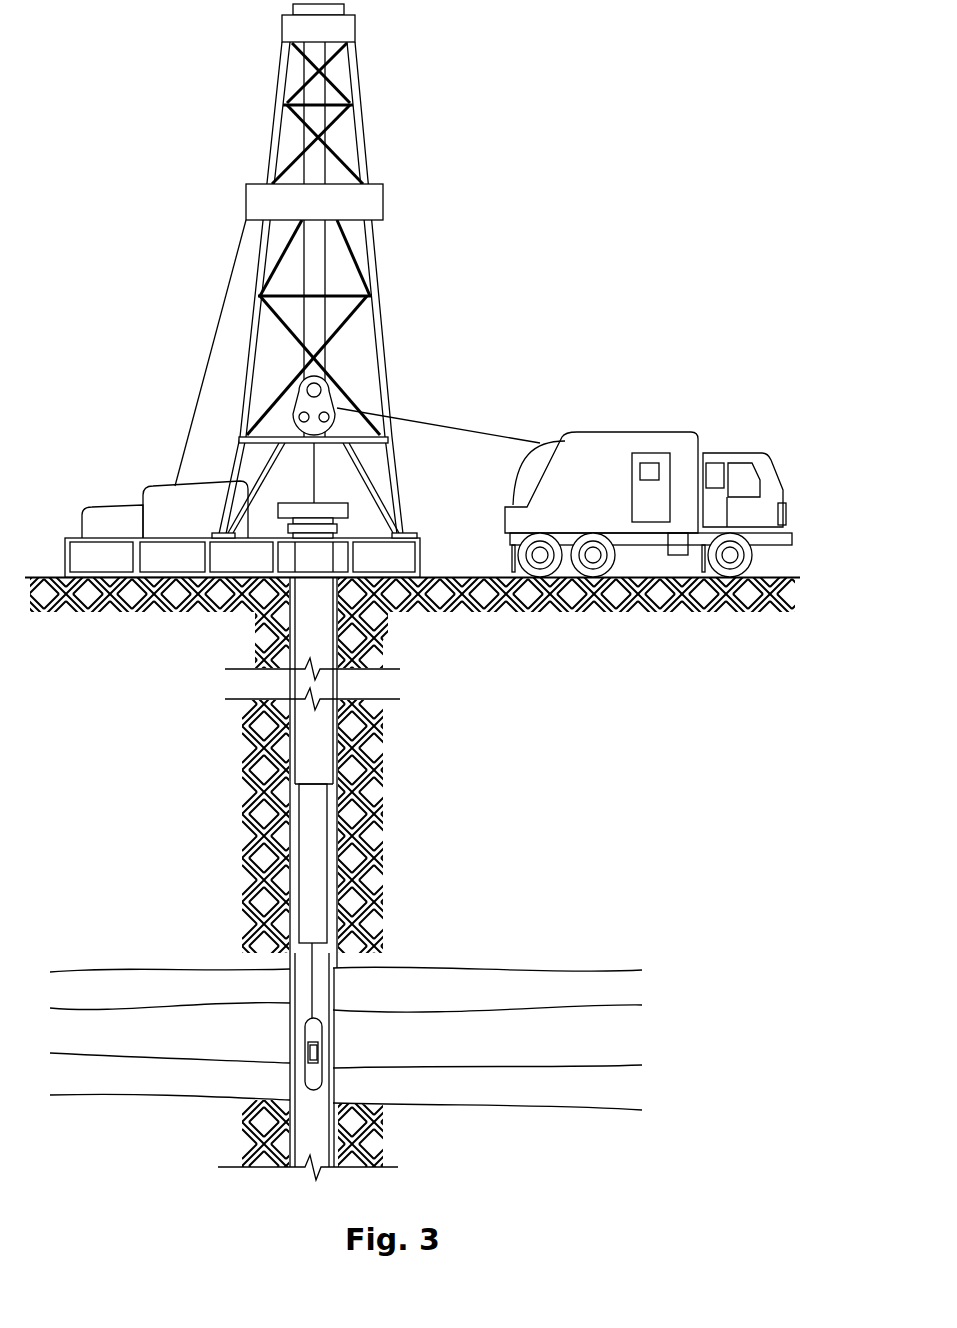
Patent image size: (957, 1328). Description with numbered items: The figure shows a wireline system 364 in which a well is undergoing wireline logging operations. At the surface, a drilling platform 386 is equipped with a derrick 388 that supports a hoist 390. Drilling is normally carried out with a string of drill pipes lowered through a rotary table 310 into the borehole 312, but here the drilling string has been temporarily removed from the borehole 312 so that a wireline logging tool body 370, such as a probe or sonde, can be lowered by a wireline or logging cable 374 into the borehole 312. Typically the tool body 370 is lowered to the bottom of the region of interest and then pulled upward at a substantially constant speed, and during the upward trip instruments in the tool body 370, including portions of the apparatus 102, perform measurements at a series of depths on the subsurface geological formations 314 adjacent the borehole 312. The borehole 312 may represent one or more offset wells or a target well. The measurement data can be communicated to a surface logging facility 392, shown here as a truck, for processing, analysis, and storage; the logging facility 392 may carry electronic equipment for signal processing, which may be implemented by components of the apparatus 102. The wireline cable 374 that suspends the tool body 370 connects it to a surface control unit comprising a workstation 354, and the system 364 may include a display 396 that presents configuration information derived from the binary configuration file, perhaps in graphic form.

The wireline system 364 is at (548, 158).
The hoist 390 is at (340, 385).
The wireline or logging cable 374 is at (437, 427).
The rotary table 310 is at (347, 503).
The derrick 388 is at (405, 532).
The drilling platform 386 is at (420, 568).
The surface logging facility 392 is at (595, 432).
The display 396 is at (648, 462).
The workstation 354 is at (632, 498).
The borehole 312 is at (293, 982).
The wireline logging tool body 370 is at (322, 1028).
The apparatus 102 is at (317, 1050).
The subsurface geological formations 314 is at (653, 970).